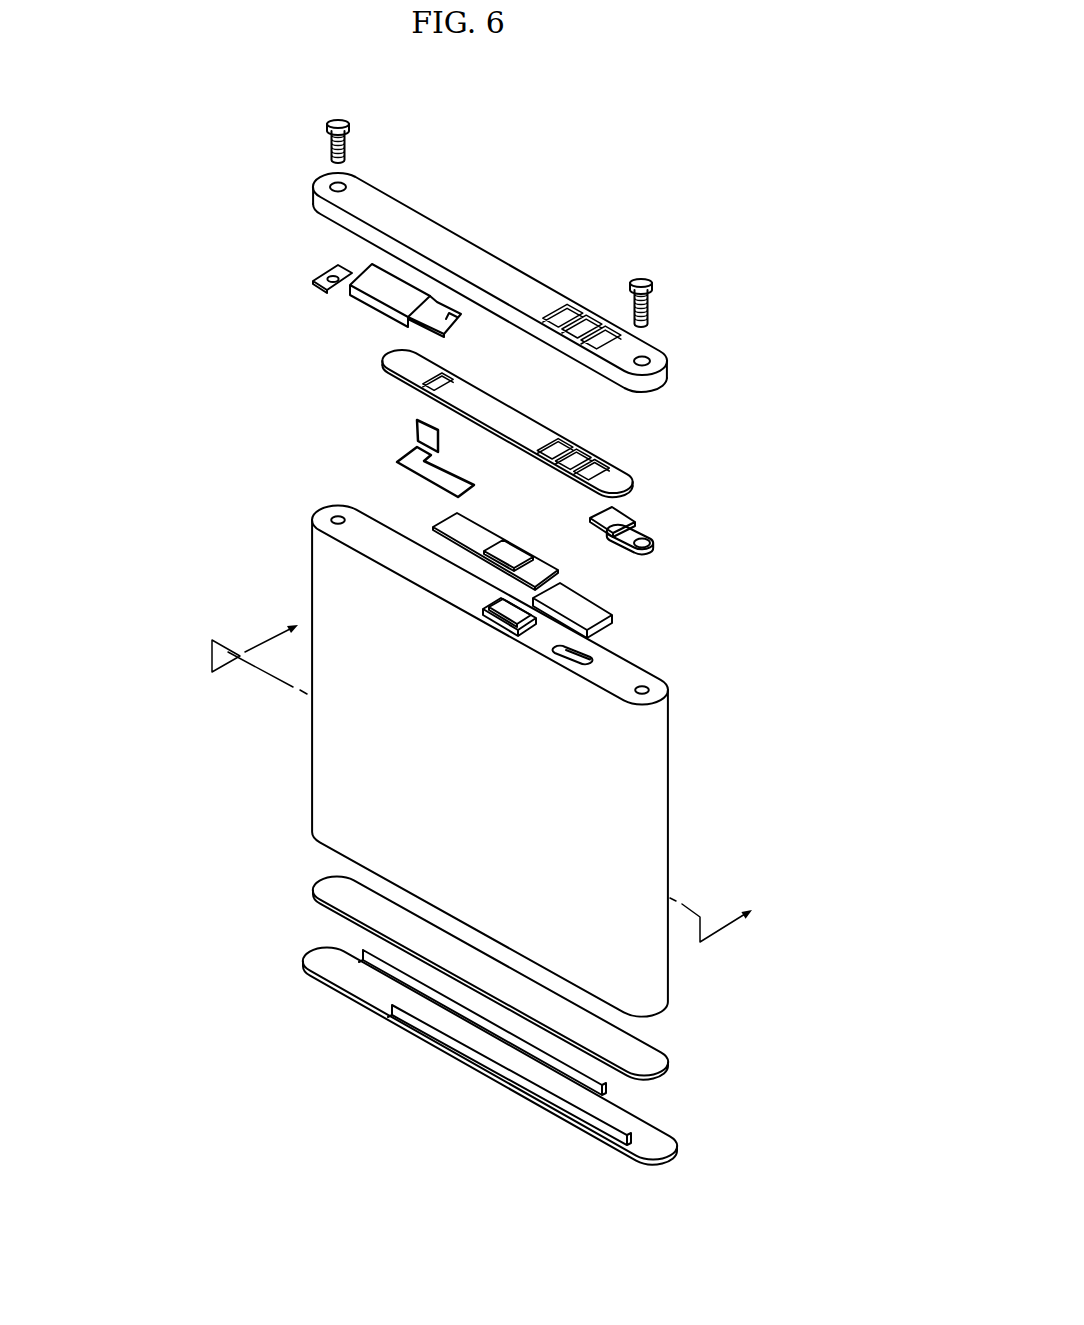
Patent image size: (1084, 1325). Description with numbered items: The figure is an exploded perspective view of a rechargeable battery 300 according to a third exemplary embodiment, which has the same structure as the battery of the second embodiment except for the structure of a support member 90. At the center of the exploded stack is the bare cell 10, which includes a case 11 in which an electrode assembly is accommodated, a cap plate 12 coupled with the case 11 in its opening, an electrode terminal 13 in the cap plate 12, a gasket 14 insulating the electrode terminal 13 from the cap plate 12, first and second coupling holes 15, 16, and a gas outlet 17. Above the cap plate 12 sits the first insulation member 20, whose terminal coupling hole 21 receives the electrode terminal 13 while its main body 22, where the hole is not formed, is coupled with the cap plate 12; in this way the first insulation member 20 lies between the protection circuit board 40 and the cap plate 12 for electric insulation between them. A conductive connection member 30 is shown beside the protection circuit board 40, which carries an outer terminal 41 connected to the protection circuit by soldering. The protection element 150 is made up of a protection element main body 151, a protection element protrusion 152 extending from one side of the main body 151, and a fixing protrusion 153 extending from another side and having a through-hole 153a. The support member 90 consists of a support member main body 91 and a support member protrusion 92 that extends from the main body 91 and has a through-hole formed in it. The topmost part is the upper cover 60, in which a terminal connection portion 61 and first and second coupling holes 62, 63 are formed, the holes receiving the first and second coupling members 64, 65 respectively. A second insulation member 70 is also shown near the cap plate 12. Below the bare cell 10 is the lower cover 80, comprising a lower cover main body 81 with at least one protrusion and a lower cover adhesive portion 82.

The rechargeable battery 300 is at (477, 143).
The bare cell 10 is at (496, 741).
The case 11 is at (650, 745).
The cap plate 12 is at (470, 585).
The electrode terminal 13 is at (484, 611).
The gasket 14 is at (500, 627).
The first coupling hole 15 is at (645, 688).
The second coupling hole 16 is at (334, 514).
The gas outlet 17 is at (585, 658).
The first insulation member 20 is at (504, 535).
The terminal coupling hole 21 is at (505, 553).
The main body 22 is at (540, 571).
The conductive connection member 30 is at (386, 436).
The protection circuit board 40 is at (536, 423).
The outer terminal 41 is at (568, 442).
The upper cover 60 is at (475, 274).
The terminal connection portion 61 is at (603, 330).
The first coupling hole 62 is at (650, 357).
The second coupling hole 63 is at (336, 186).
The first coupling member 64 is at (652, 296).
The second coupling member 65 is at (350, 132).
The second insulation member 70 is at (612, 612).
The lower cover 80 is at (540, 1020).
The lower cover main body 81 is at (740, 1045).
The lower cover adhesive portion 82 is at (660, 1053).
The support member 90 is at (676, 518).
The support member main body 91 is at (628, 516).
The support member protrusion 92 is at (662, 537).
The protection element 150 is at (372, 303).
The protection element main body 151 is at (378, 287).
The protection element protrusion 152 is at (455, 314).
The fixing protrusion 153 is at (283, 301).
The through-hole 153a is at (320, 280).